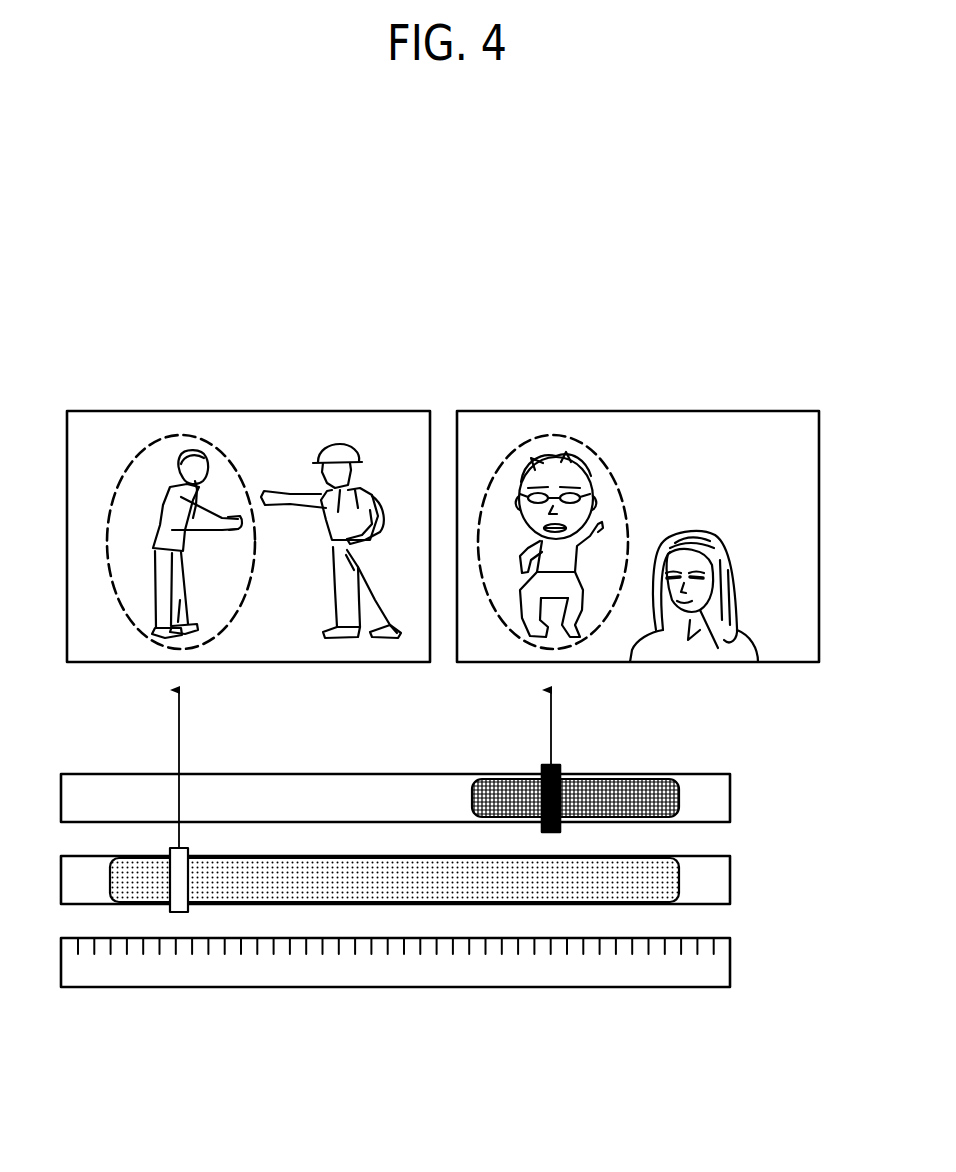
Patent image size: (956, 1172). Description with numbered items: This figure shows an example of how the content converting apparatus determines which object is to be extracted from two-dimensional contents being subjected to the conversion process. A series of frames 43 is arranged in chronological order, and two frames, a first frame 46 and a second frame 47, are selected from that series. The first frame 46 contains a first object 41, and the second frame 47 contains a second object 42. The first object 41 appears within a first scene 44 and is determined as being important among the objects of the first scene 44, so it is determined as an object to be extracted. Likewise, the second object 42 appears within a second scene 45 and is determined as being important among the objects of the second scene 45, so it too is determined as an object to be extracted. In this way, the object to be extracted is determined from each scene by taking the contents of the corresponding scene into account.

The first object 41 is at (176, 434).
The second object 42 is at (549, 434).
The series of frames 43 is at (730, 960).
The first scene 44 is at (730, 877).
The second scene 45 is at (730, 793).
The first frame 46 is at (320, 410).
The second frame 47 is at (694, 410).